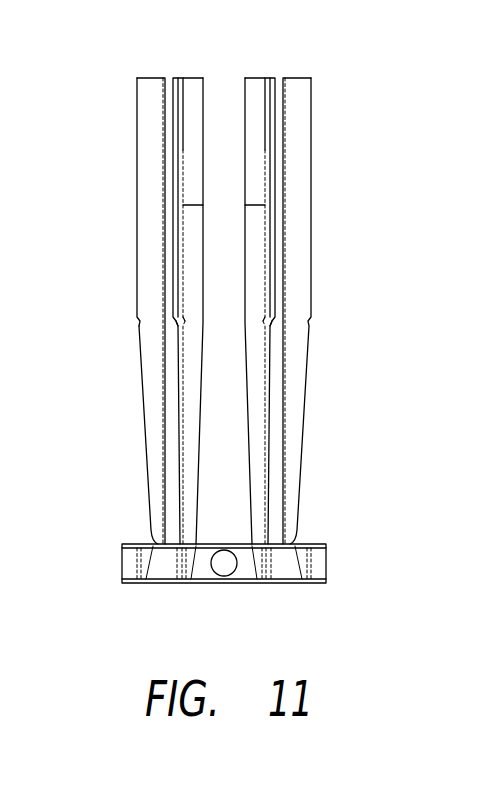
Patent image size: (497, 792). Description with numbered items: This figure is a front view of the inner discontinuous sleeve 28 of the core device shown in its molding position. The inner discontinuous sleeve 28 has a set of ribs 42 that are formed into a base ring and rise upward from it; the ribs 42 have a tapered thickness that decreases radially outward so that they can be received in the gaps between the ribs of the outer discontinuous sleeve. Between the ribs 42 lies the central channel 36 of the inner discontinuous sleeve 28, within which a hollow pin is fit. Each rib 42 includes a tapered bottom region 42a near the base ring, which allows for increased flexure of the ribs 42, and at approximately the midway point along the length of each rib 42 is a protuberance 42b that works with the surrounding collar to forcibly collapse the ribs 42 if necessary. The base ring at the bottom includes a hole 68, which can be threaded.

The inner discontinuous sleeve 28 is at (319, 166).
The ribs 42 is at (255, 86).
The tapered bottom region 42a is at (148, 443).
The protuberance 42b is at (136, 323).
The central channel 36 is at (228, 358).
The hole 68 is at (228, 568).